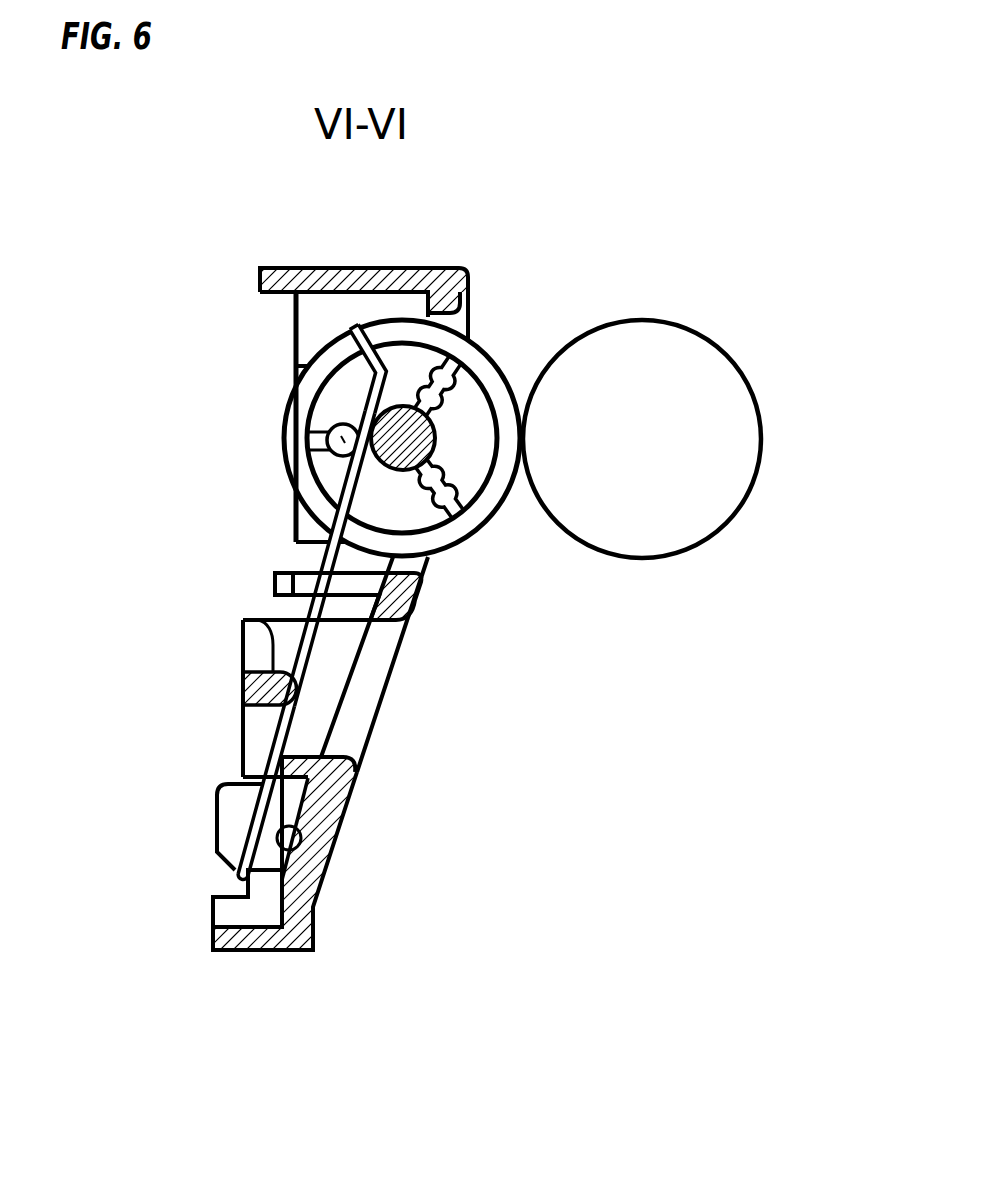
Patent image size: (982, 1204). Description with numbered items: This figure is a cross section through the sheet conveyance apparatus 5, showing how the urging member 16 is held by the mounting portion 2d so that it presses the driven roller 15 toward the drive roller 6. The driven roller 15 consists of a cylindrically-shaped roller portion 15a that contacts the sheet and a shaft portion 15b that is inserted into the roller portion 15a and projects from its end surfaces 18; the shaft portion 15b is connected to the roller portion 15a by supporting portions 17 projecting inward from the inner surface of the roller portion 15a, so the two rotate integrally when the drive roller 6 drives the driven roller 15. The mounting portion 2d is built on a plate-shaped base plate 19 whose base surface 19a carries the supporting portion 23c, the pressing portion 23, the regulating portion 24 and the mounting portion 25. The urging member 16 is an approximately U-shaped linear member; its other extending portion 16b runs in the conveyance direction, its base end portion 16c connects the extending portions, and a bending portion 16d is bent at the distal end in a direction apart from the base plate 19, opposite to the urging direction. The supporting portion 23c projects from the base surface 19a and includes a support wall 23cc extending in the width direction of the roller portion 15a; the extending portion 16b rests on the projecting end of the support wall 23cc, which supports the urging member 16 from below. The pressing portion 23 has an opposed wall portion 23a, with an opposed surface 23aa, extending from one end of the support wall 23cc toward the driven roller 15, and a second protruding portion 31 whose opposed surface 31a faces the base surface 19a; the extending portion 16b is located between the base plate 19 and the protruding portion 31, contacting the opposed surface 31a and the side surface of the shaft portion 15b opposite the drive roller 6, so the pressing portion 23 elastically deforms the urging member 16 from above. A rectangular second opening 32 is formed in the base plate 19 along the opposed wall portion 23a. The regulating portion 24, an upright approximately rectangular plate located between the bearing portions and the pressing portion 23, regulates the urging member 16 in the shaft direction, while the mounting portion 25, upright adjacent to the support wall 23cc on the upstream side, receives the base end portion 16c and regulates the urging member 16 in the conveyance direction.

The sheet conveyance apparatus 5 is at (223, 258).
The mounting portion 2d is at (448, 268).
The driven roller 15 is at (482, 340).
The roller portion 15a is at (287, 413).
The shaft portion 15b is at (437, 440).
The supporting portion 17 is at (335, 459).
The end surface 18 is at (450, 540).
The drive roller 6 is at (640, 320).
The urging member 16 is at (330, 558).
The other extending portion 16b is at (330, 518).
The base end portion 16c is at (237, 874).
The bending portion 16d is at (365, 331).
The regulating portion 24 is at (275, 585).
The second opening 32 is at (358, 705).
The second protruding portion 31 is at (262, 618).
The opposed surface 31a is at (292, 669).
The pressing portion 23 is at (229, 697).
The one opposed wall portion 23a is at (244, 654).
The opposed surface 23aa is at (266, 737).
The support wall 23cc is at (270, 766).
The supporting portion 23c is at (307, 748).
The base plate 19 is at (340, 806).
The base surface 19a is at (302, 838).
The mounting portion 25 is at (210, 857).